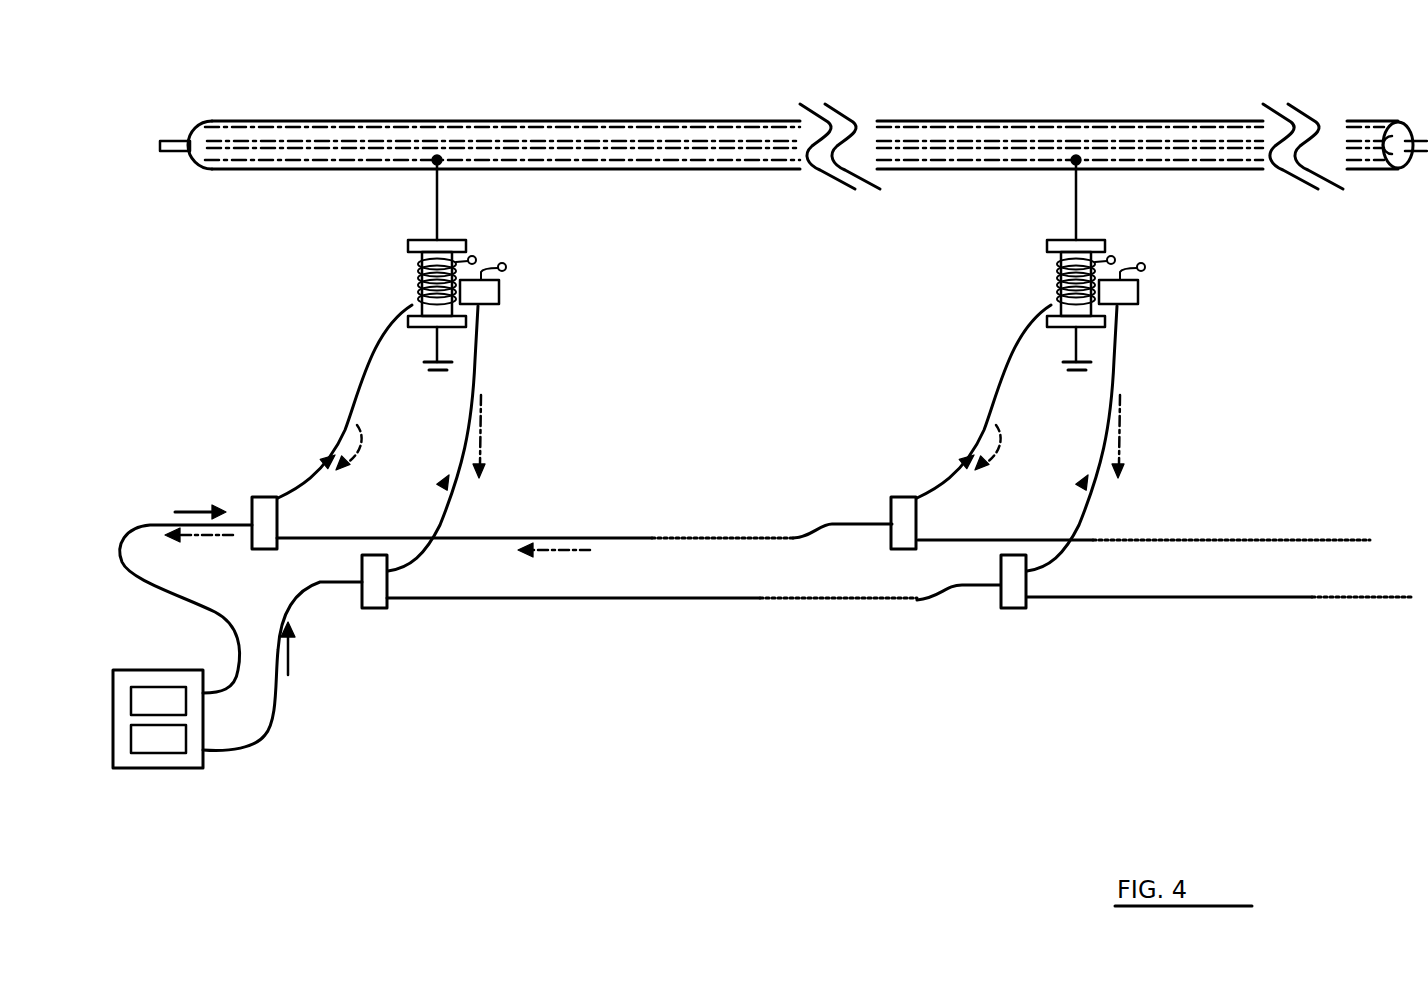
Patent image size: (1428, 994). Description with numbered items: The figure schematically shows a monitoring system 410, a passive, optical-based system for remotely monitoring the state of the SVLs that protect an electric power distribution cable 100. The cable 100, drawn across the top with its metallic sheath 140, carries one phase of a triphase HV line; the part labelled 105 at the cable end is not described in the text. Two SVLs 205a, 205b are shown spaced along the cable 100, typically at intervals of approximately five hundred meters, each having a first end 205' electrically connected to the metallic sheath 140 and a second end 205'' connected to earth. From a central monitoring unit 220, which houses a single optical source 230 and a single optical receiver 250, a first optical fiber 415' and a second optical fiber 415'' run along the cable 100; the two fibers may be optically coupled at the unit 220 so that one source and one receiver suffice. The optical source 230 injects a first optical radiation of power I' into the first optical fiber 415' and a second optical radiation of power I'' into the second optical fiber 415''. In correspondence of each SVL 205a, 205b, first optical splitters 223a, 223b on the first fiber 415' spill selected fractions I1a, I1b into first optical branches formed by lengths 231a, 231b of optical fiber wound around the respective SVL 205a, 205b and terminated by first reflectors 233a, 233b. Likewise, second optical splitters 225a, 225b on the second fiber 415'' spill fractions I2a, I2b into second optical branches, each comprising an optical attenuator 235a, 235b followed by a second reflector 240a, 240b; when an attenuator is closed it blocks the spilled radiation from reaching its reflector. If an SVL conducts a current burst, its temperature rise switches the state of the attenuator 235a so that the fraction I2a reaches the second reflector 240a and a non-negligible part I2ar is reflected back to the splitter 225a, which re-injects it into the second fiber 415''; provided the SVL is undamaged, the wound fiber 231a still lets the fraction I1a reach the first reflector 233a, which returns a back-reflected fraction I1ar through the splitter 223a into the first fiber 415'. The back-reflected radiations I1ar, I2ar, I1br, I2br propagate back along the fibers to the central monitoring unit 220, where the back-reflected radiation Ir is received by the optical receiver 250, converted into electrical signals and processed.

The cable 100 is at (671, 117).
The line end connector 105 is at (160, 138).
The metallic sheath 140 is at (328, 132).
The SVL 205a is at (440, 262).
The SVL 205b is at (1106, 262).
The first end 205' is at (393, 242).
The second end 205'' is at (418, 346).
The length of optical fiber 231a is at (418, 290).
The length of optical fiber 231b is at (1026, 282).
The first reflector 233a is at (477, 258).
The first reflector 233b is at (1165, 231).
The optical attenuator 235a is at (499, 292).
The optical attenuator 235b is at (1173, 288).
The second reflector 240a is at (508, 267).
The second reflector 240b is at (1189, 260).
The first optical splitter 223a is at (263, 497).
The first optical splitter 223b is at (947, 427).
The second optical splitter 225a is at (385, 610).
The second optical splitter 225b is at (1059, 503).
The first optical fiber 415' is at (727, 569).
The second optical fiber 415'' is at (808, 666).
The central monitoring unit 220 is at (165, 770).
The optical source 230 is at (150, 695).
The optical receiver 250 is at (178, 746).
The monitoring system 410 is at (863, 788).
The optical power of first optical radiation I' is at (188, 472).
The optical power of second optical radiation I'' is at (307, 648).
The back-reflected optical radiation Ir is at (198, 543).
The spilled optical radiation fraction I1a is at (318, 458).
The back-reflected optical radiation fraction I1ar is at (360, 445).
The spilled optical radiation fraction I2a is at (440, 482).
The back-reflected optical radiation I2ar is at (485, 435).
The spilled optical radiation fraction I1b is at (943, 429).
The back-reflected optical radiation I1br is at (972, 472).
The spilled optical radiation fraction I2b is at (1062, 456).
The back-reflected optical radiation I2br is at (1152, 436).